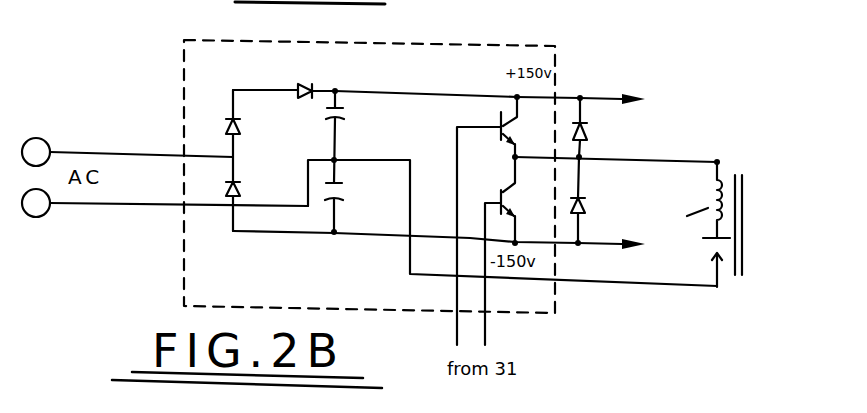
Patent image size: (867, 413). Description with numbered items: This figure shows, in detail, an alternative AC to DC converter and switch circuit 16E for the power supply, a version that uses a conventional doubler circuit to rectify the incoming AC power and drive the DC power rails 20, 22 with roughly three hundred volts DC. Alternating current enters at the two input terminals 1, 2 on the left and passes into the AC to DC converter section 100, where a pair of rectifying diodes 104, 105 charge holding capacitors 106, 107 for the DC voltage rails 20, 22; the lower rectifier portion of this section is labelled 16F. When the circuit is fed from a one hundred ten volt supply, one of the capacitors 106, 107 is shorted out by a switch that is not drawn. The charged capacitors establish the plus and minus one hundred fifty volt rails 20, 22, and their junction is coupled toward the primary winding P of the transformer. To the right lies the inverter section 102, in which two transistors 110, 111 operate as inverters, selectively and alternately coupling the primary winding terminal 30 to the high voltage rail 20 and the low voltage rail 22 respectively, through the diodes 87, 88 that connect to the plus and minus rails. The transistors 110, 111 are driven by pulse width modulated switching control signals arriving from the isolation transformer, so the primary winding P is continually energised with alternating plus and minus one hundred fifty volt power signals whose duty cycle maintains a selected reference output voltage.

The AC input terminal 1 is at (127, 152).
The AC input terminal 2 is at (165, 203).
The AC to DC converter and switch circuit 16E is at (518, 43).
The rectifier section 16F is at (300, 243).
The AC to DC converter section 100 is at (282, 77).
The inverter section 102 is at (436, 80).
The rectifying diode 104 is at (241, 121).
The rectifying diode 105 is at (241, 183).
The holding capacitor 106 is at (344, 112).
The holding capacitor 107 is at (343, 185).
The transistor 110 is at (497, 118).
The transistor 111 is at (499, 197).
The diode 87 is at (589, 132).
The diode 88 is at (588, 207).
The DC power rail 20 is at (616, 119).
The DC power rail 22 is at (653, 270).
The primary winding terminal 30 is at (718, 162).